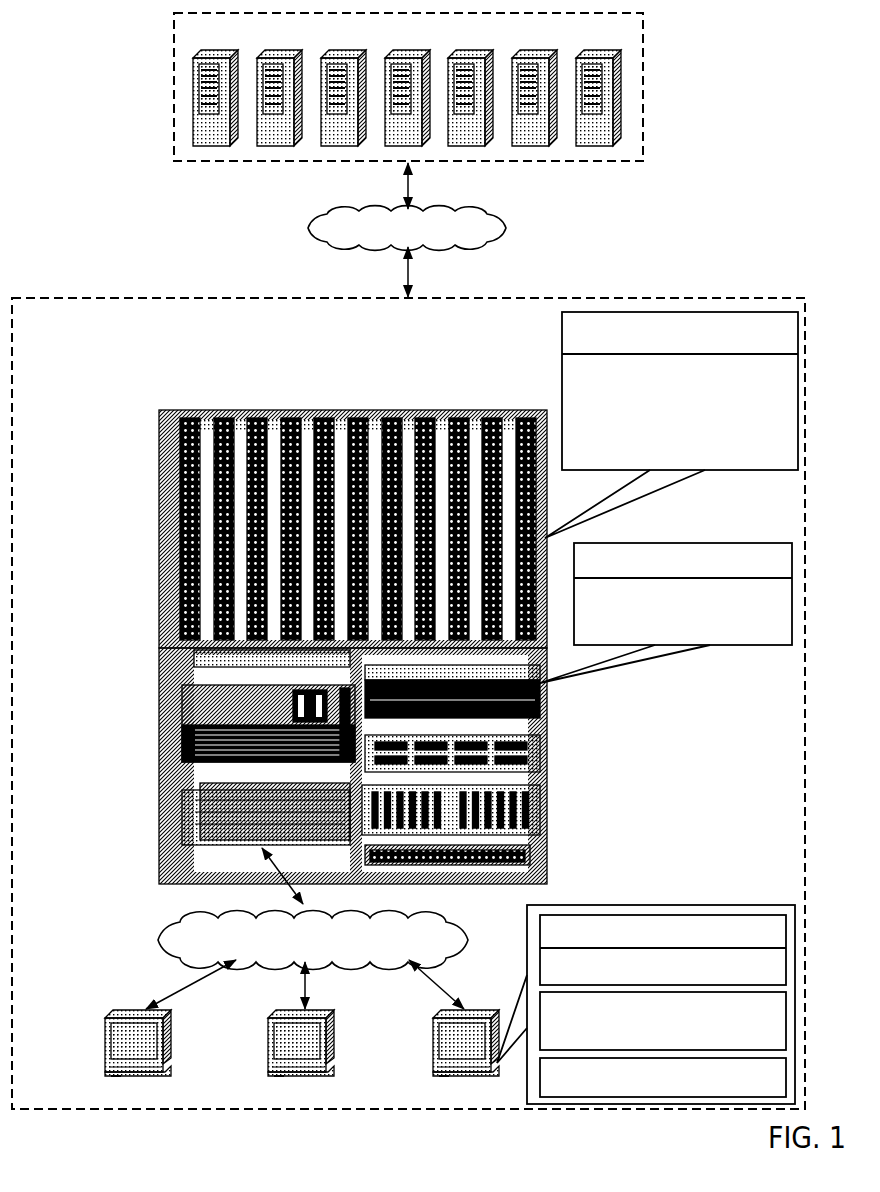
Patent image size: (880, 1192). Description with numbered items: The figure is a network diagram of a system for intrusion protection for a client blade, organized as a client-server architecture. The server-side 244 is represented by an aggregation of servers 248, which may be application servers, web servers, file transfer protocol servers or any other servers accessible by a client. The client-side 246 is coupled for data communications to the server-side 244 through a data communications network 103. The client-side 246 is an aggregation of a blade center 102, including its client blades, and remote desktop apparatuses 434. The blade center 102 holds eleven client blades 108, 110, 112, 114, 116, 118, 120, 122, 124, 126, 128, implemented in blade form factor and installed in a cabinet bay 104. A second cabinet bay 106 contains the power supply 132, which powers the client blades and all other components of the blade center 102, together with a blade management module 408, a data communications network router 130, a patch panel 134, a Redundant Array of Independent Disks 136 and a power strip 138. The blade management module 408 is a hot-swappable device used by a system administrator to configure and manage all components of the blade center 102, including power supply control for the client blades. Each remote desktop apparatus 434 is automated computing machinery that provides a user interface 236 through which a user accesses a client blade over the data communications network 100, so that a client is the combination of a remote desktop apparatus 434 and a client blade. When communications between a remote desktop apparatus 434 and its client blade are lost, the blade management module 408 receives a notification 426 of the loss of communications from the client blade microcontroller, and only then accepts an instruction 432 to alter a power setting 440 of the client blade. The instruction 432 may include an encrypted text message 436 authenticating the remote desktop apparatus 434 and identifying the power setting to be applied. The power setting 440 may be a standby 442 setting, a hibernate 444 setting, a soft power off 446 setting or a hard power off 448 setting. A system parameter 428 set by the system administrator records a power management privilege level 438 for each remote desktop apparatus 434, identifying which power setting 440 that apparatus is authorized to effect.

The server-side 244 is at (476, 38).
The servers 248 is at (623, 96).
The data communications network 103 is at (458, 237).
The client-side 246 is at (471, 324).
The client blade 108 is at (190, 418).
The client blade 110 is at (224, 418).
The client blade 112 is at (257, 418).
The client blade 114 is at (291, 418).
The client blade 116 is at (324, 418).
The client blade 118 is at (358, 418).
The client blade 120 is at (392, 418).
The client blade 122 is at (425, 418).
The client blade 124 is at (459, 418).
The client blade 126 is at (492, 418).
The client blade 128 is at (526, 418).
The cabinet bay 104 is at (318, 498).
The cabinet bay 106 is at (411, 759).
The blade center 102 is at (411, 632).
The power supply 132 is at (159, 711).
The data communications network router 130 is at (159, 822).
The power setting 440 is at (671, 425).
The standby power setting 442 is at (689, 384).
The hibernate power setting 444 is at (699, 409).
The soft power off setting 446 is at (746, 433).
The hard power off setting 448 is at (749, 458).
The system parameter 428 is at (666, 613).
The power management privilege level 438 is at (761, 638).
The blade management module 408 is at (548, 702).
The patch panel 134 is at (547, 755).
The Redundant Array of Independent Disks 136 is at (547, 812).
The power strip 138 is at (547, 856).
The data communications network 100 is at (361, 949).
The remote desktop apparatus 434 is at (431, 1096).
The instruction 432 is at (646, 1004).
The encrypted text message 436 is at (783, 973).
The notification of the loss of communications 426 is at (749, 1042).
The user interface 236 is at (736, 1087).